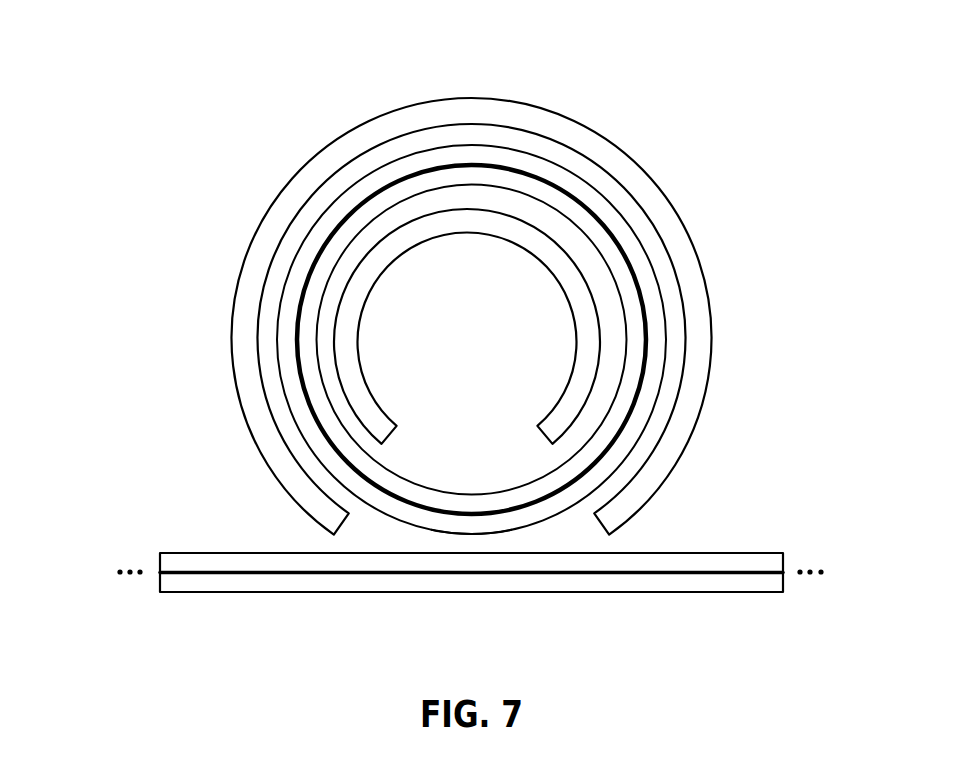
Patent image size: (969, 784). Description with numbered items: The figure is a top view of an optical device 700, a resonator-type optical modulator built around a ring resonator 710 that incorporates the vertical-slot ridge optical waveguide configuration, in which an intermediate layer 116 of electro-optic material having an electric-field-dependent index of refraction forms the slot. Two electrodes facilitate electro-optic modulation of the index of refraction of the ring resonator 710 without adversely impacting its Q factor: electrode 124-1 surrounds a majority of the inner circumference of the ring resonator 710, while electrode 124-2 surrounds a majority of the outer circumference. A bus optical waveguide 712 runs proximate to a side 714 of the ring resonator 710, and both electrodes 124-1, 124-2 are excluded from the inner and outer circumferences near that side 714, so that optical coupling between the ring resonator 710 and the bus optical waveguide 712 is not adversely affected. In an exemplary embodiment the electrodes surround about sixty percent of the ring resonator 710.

The optical device 700 is at (227, 75).
The ring resonator 710 is at (497, 158).
The intermediate layer 116 is at (238, 572).
The electrode 124-1 is at (582, 307).
The electrode 124-2 is at (685, 425).
The bus optical waveguide 712 is at (178, 592).
The side 714 is at (477, 533).